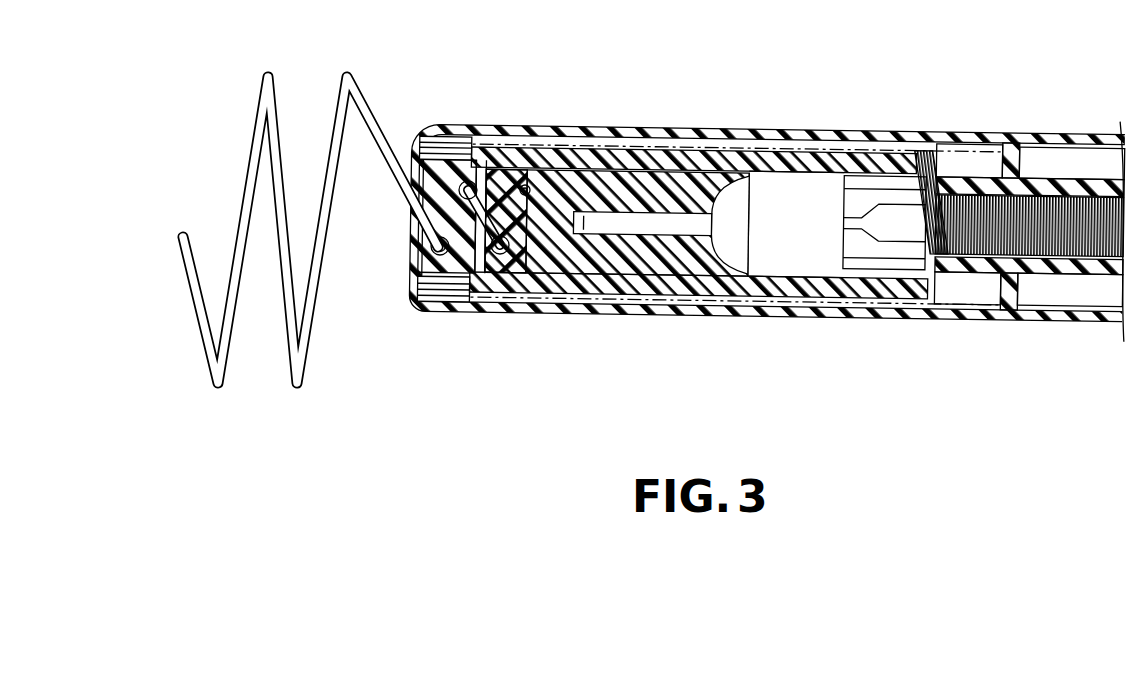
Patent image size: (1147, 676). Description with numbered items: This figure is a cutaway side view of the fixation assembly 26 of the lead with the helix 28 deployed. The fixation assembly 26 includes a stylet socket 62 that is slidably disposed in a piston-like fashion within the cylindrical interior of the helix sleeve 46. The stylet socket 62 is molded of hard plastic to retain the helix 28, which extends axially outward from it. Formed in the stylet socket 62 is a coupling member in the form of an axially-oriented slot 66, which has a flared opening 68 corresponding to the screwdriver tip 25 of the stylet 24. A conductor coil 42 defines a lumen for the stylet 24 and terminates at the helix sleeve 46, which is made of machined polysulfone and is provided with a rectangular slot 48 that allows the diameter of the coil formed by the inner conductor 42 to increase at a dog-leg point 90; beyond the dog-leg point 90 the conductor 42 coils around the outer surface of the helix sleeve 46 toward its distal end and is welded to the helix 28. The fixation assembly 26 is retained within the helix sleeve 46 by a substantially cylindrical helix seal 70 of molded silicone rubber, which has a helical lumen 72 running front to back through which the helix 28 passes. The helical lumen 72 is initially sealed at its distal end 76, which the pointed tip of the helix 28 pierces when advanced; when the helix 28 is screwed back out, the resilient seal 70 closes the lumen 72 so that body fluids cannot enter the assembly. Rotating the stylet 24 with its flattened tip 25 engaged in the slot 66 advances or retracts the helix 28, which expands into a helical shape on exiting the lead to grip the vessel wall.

The stylet 24 is at (903, 240).
The screwdriver tip 25 is at (603, 222).
The fixation assembly 26 is at (590, 120).
The helix 28 is at (297, 390).
The conductor coil 42 is at (927, 157).
The helix sleeve 46 is at (791, 296).
The rectangular slot 48 is at (980, 163).
The stylet socket 62 is at (650, 277).
The axially-oriented slot 66 is at (657, 210).
The flared opening 68 is at (748, 220).
The helix seal 70 is at (418, 180).
The helical lumen 72 is at (492, 258).
The distal end 76 is at (420, 252).
The dog-leg point 90 is at (918, 255).